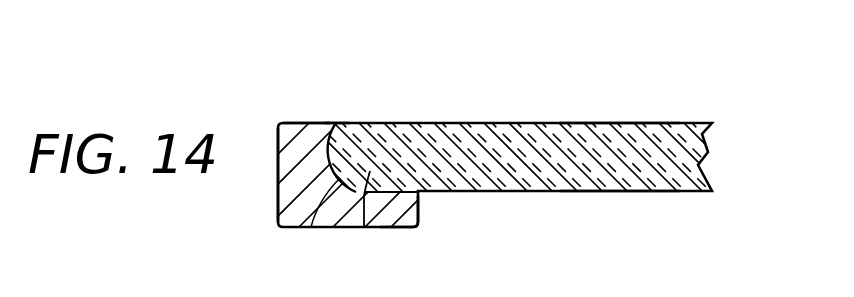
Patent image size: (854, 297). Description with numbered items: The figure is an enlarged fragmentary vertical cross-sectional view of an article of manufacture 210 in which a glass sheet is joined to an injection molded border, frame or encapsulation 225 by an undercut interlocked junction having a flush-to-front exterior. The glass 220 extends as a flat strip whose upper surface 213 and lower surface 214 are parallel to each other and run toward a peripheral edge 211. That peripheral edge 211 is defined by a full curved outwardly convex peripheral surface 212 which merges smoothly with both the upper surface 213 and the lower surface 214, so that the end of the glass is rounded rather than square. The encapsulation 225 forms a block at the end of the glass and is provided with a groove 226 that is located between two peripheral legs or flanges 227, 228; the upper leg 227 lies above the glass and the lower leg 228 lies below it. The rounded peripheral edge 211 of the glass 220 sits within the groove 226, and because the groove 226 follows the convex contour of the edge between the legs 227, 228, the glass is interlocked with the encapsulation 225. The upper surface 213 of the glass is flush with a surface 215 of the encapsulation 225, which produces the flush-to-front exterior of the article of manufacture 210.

The article of manufacture 210 is at (518, 95).
The peripheral edge 211 is at (365, 227).
The peripheral surface 212 is at (311, 227).
The upper surface 213 is at (615, 123).
The lower surface 214 is at (617, 191).
The surface 215 is at (305, 123).
The glass 220 is at (697, 162).
The encapsulation 225 is at (290, 185).
The groove 226 is at (338, 161).
The peripheral leg 227 is at (335, 123).
The peripheral leg 228 is at (407, 210).